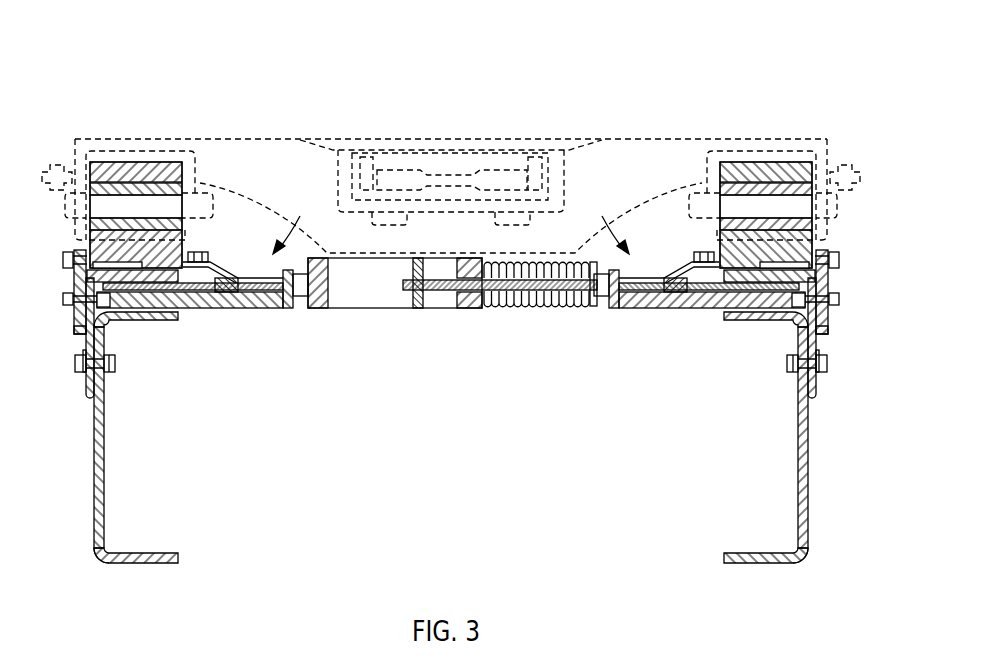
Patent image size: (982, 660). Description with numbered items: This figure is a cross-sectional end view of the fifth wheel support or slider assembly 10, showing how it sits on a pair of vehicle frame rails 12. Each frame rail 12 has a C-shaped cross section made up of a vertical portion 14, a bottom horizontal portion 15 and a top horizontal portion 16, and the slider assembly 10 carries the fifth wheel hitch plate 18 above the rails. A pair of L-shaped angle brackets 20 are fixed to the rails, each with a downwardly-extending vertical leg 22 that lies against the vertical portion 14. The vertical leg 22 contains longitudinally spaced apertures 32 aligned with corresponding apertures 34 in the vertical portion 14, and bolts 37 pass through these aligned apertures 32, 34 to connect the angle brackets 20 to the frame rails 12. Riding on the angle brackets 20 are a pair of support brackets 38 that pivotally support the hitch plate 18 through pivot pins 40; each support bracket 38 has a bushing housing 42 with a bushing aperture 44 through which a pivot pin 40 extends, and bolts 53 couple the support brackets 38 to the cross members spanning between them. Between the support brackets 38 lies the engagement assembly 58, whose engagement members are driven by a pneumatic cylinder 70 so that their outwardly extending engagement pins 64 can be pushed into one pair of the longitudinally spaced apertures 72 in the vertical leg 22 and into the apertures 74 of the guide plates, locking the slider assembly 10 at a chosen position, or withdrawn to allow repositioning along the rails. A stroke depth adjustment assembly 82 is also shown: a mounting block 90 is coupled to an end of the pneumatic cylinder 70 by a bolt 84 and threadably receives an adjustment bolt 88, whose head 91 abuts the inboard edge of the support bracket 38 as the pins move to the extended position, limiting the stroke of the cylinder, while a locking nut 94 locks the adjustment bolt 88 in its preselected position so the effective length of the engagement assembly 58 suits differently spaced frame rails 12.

The fifth wheel support or slider assembly 10 is at (130, 30).
The vehicle frame rails 12 is at (806, 547).
The vertical portion 14 is at (809, 440).
The bottom horizontal portion 15 is at (747, 553).
The top horizontal portion 16 is at (754, 321).
The fifth wheel hitch plate 18 is at (627, 128).
The angle brackets 20 is at (833, 256).
The vertical leg 22 is at (816, 350).
The apertures 32 is at (798, 351).
The apertures 34 is at (796, 377).
The bolts 37 is at (822, 372).
The support brackets 38 is at (792, 160).
The pivot pins 40 is at (690, 198).
The bushing housing 42 is at (767, 183).
The bushing aperture 44 is at (749, 205).
The bolts 53 is at (702, 250).
The engagement assembly 58 is at (610, 351).
The engagement pins 64 is at (834, 293).
The pneumatic cylinder 70 is at (340, 310).
The apertures 72 is at (828, 334).
The apertures 74 is at (828, 318).
The stroke depth adjustment assembly 82 is at (451, 218).
The bolt 84 is at (594, 258).
The adjustment bolt 88 is at (652, 291).
The mounting block 90 is at (632, 270).
The head 91 is at (680, 308).
The locking nut 94 is at (664, 293).